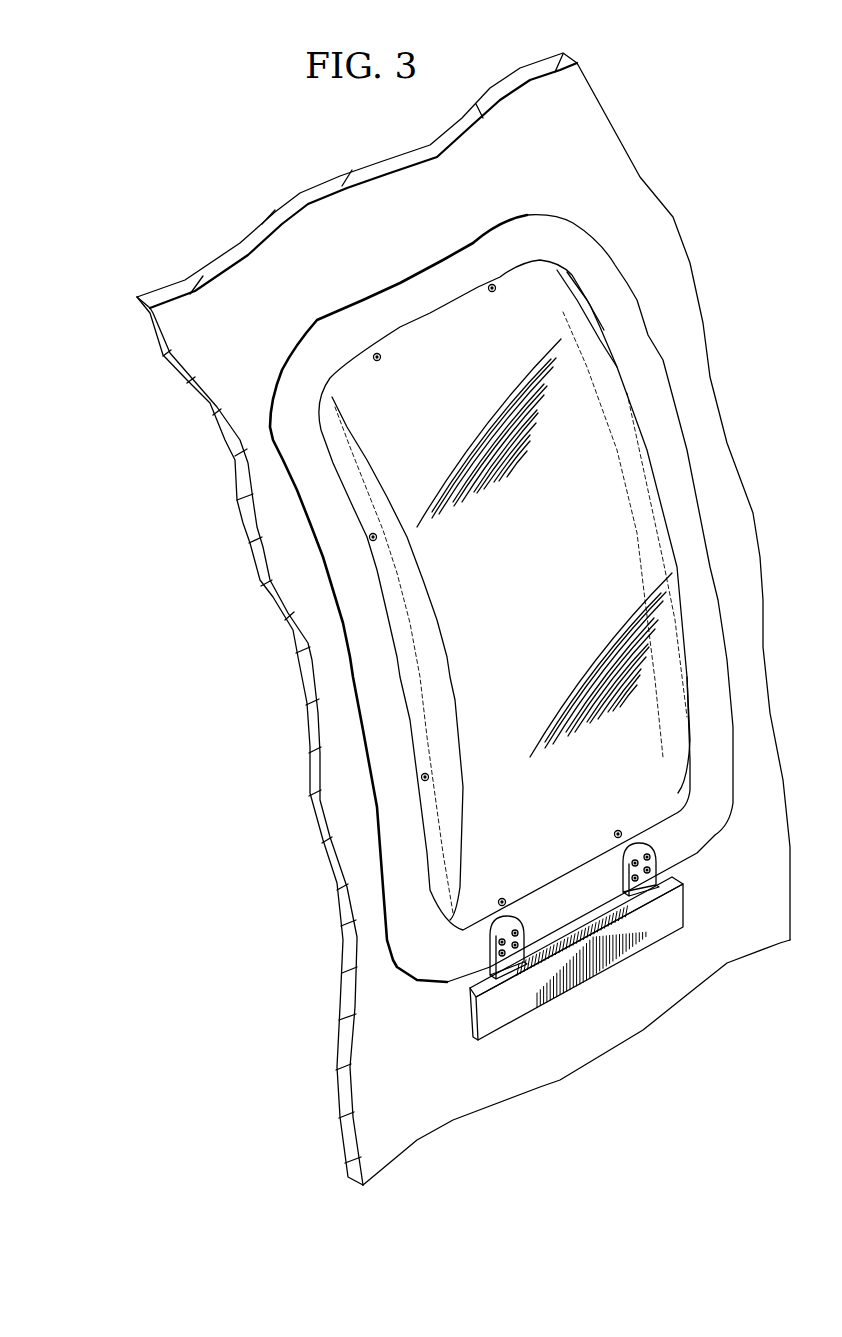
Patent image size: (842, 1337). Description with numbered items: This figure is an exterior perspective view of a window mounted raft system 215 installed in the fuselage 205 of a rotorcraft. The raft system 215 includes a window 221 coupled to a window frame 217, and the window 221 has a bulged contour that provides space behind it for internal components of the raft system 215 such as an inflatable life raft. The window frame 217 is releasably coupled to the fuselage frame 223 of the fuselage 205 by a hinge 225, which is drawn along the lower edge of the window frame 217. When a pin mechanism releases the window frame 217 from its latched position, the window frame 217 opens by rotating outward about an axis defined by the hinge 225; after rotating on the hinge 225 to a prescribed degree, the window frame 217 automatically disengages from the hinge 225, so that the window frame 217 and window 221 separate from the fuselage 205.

The fuselage 205 is at (362, 1083).
The raft system 215 is at (404, 593).
The window frame 217 is at (358, 298).
The window 221 is at (478, 287).
The fuselage frame 223 is at (595, 118).
The hinge 225 is at (673, 908).